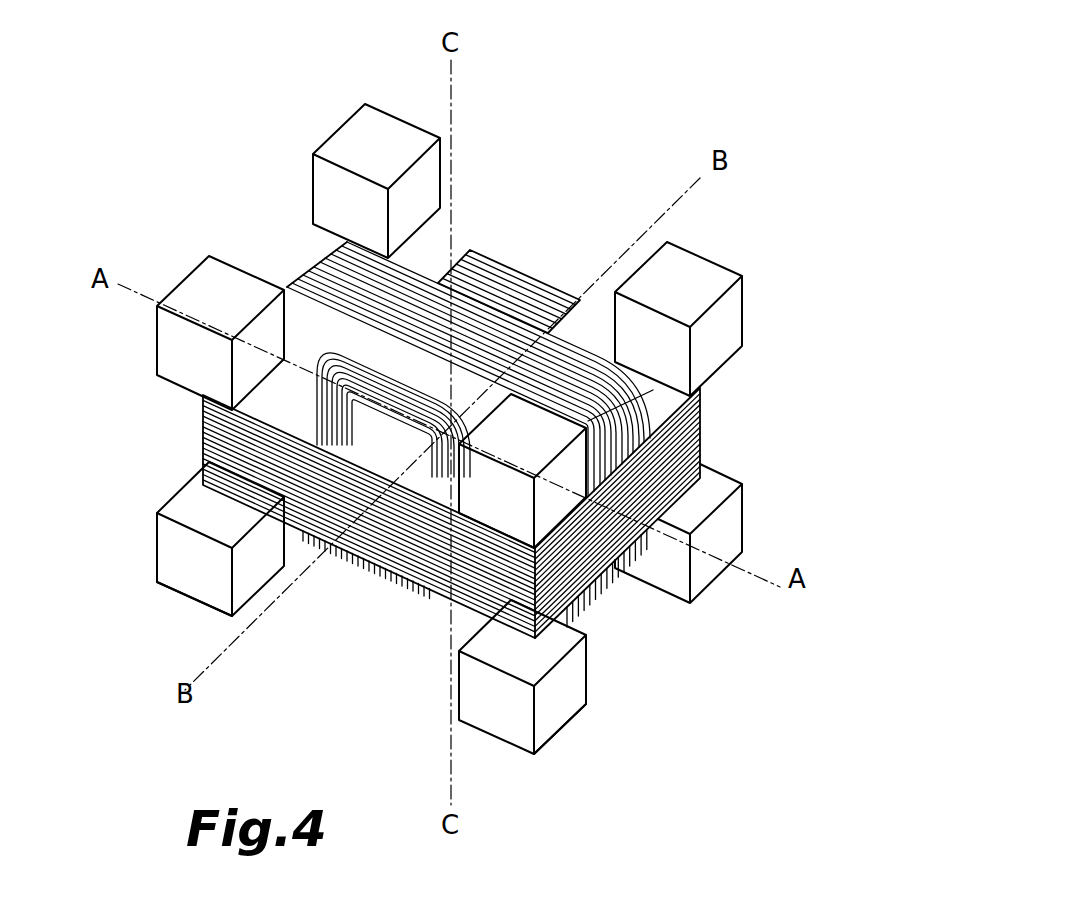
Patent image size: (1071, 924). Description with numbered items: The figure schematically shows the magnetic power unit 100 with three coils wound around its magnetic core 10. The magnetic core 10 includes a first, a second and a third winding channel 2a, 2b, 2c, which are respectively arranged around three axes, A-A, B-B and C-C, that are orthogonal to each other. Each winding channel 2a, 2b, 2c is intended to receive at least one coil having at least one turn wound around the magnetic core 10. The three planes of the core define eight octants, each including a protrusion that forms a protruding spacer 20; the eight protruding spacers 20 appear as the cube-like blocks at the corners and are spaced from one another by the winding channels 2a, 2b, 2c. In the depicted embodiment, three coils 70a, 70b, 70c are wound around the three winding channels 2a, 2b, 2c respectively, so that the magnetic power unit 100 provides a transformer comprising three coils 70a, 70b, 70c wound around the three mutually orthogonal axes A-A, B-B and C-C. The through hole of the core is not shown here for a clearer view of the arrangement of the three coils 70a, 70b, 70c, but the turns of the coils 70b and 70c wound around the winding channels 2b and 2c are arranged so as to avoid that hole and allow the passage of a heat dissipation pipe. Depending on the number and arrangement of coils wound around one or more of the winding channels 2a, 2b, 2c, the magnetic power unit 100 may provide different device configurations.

The magnetic power unit 100 is at (612, 96).
The protruding spacer 20 is at (488, 419).
The coil 70a is at (520, 266).
The coil 70b is at (310, 262).
The coil 70c is at (698, 420).
The first winding channel 2a is at (358, 584).
The second winding channel 2b is at (616, 589).
The third winding channel 2c is at (197, 436).
The magnetic core 10 is at (375, 646).